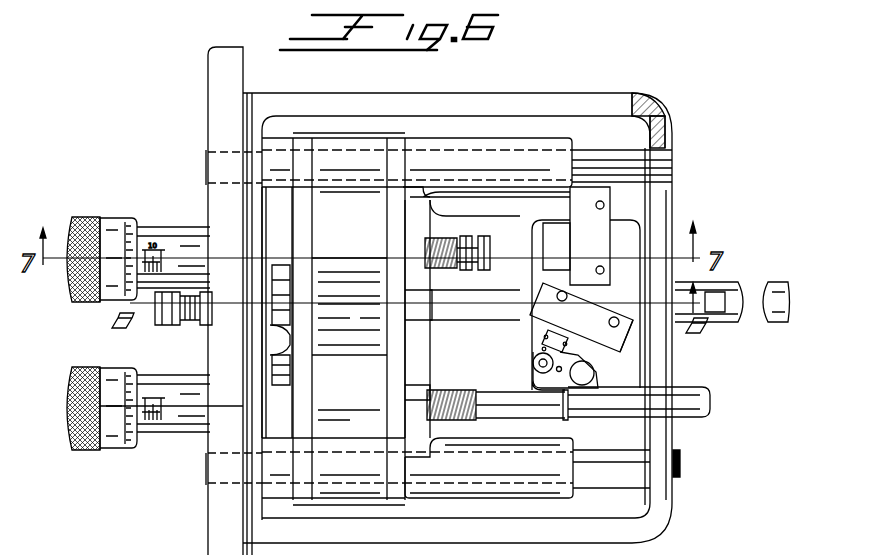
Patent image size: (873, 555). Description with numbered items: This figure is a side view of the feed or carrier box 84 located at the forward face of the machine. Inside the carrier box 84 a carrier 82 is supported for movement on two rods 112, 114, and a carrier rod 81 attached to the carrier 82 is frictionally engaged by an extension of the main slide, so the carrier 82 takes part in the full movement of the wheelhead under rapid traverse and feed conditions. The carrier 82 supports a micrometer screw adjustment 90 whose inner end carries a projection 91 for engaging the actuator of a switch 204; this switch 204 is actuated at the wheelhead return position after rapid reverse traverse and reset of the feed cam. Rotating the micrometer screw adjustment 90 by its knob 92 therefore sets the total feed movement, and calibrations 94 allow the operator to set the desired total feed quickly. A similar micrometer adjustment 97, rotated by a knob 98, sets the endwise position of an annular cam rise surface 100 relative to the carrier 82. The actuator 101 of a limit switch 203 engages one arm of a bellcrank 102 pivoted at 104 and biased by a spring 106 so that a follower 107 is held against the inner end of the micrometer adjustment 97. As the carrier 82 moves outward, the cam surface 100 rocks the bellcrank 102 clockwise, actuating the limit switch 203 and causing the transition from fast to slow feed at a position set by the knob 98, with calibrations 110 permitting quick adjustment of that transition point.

The carrier rod 81 is at (722, 290).
The carrier 82 is at (351, 398).
The carrier box 84 is at (612, 93).
The micrometer screw adjustment 90 is at (435, 243).
The projection 91 is at (486, 248).
The knob 92 is at (97, 220).
The calibrations 94 is at (137, 242).
The micrometer adjustment 97 is at (487, 395).
The knob 98 is at (85, 367).
The annular cam rise surface 100 is at (566, 412).
The actuator 101 is at (541, 348).
The bellcrank 102 is at (598, 370).
The pivot 104 is at (588, 376).
The spring 106 is at (580, 333).
The follower 107 is at (563, 400).
The calibrations 110 is at (143, 402).
The rod 112 is at (590, 162).
The rod 114 is at (600, 470).
The limit switch 203 is at (584, 335).
The switch 204 is at (602, 245).